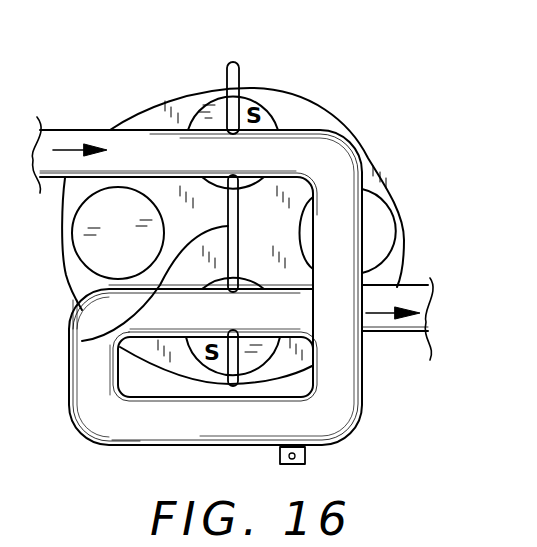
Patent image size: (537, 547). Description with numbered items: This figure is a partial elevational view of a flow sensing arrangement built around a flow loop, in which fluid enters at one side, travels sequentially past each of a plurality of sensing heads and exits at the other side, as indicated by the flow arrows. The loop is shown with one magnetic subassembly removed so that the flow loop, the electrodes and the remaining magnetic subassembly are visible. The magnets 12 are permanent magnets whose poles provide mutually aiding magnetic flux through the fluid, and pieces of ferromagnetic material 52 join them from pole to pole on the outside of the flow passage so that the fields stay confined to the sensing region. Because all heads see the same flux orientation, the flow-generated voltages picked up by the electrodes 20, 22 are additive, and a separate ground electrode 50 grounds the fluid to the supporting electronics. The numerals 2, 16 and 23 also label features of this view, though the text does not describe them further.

The magnet 2 is at (77, 221).
The magnets 12 is at (381, 206).
The fluid conduit 16 is at (57, 176).
The electrode 20 is at (243, 73).
The electrode 22 is at (233, 382).
The pole piece 23 is at (82, 341).
The ground electrode 50 is at (307, 457).
The ferromagnetic material 52 is at (155, 109).